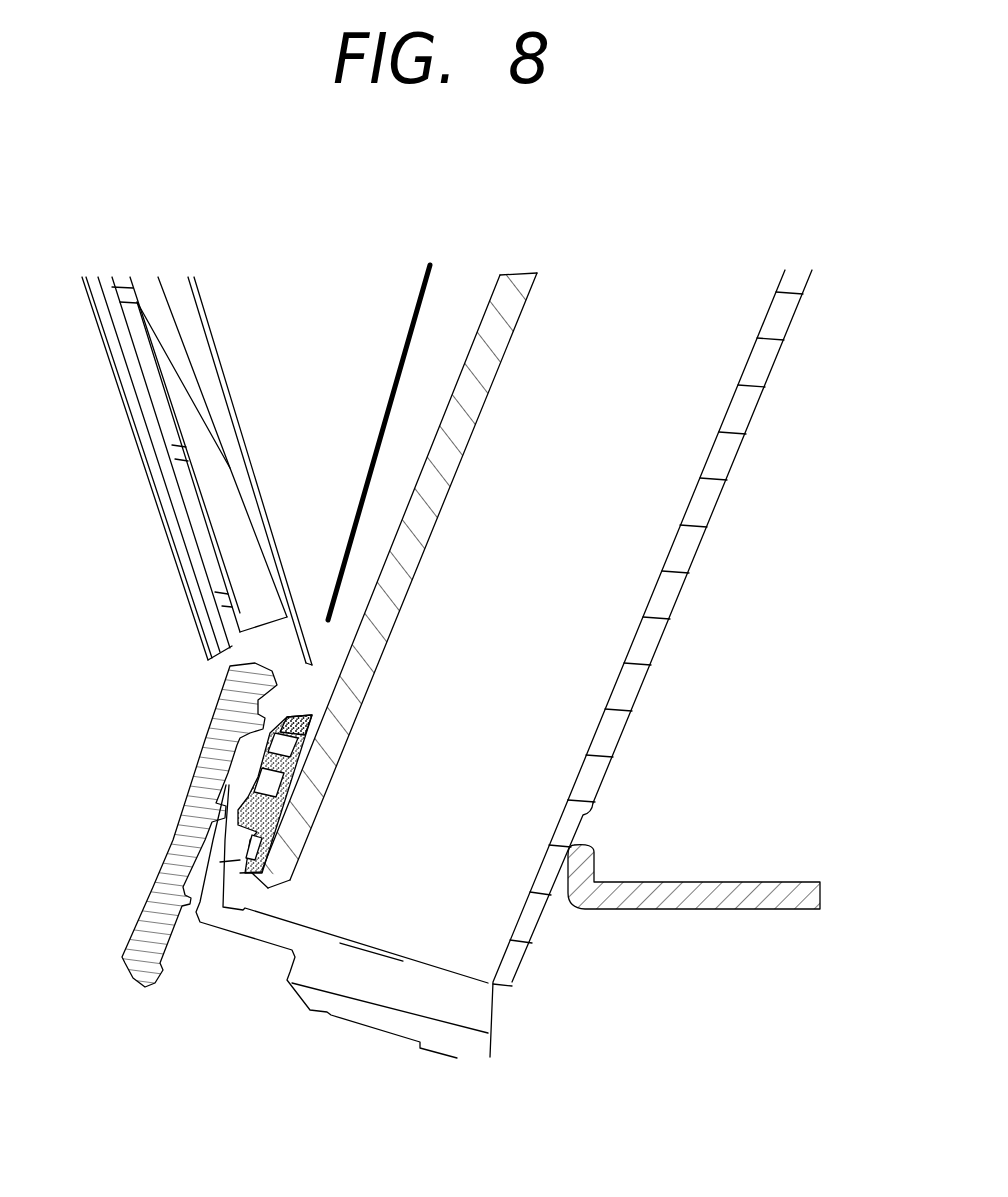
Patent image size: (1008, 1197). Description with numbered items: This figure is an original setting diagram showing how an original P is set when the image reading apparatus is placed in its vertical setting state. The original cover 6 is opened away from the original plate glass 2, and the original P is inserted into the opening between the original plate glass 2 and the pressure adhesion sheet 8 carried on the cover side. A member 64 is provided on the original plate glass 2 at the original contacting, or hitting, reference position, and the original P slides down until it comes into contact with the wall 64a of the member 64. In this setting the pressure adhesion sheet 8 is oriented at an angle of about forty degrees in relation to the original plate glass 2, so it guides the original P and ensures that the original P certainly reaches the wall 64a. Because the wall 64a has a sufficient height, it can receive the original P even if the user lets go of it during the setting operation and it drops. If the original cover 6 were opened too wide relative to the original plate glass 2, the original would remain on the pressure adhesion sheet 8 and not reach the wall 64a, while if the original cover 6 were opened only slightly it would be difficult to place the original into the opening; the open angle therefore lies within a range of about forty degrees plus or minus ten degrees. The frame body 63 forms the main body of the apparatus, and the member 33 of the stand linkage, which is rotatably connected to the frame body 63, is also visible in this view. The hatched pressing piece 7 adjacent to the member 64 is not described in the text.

The original plate glass 2 is at (472, 347).
The original cover 6 is at (160, 520).
The pressing member 7 is at (122, 950).
The pressure adhesion sheet 8 is at (230, 377).
The member 33 is at (788, 878).
The frame body 63 is at (752, 407).
The member 64 is at (240, 785).
The wall 64a is at (300, 718).
The original P is at (425, 282).